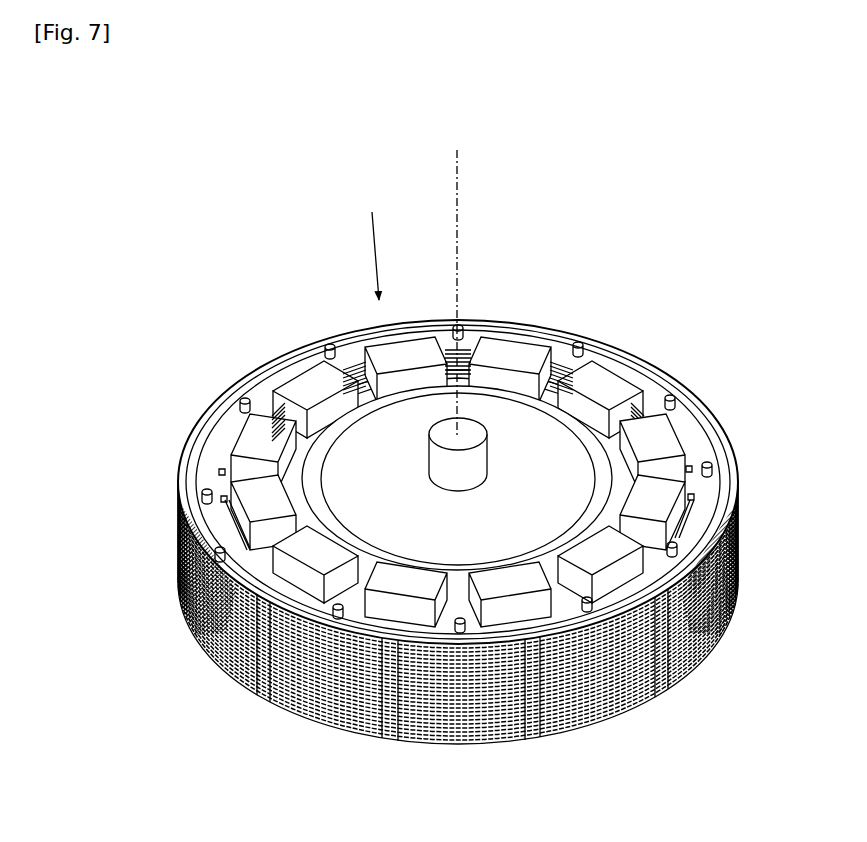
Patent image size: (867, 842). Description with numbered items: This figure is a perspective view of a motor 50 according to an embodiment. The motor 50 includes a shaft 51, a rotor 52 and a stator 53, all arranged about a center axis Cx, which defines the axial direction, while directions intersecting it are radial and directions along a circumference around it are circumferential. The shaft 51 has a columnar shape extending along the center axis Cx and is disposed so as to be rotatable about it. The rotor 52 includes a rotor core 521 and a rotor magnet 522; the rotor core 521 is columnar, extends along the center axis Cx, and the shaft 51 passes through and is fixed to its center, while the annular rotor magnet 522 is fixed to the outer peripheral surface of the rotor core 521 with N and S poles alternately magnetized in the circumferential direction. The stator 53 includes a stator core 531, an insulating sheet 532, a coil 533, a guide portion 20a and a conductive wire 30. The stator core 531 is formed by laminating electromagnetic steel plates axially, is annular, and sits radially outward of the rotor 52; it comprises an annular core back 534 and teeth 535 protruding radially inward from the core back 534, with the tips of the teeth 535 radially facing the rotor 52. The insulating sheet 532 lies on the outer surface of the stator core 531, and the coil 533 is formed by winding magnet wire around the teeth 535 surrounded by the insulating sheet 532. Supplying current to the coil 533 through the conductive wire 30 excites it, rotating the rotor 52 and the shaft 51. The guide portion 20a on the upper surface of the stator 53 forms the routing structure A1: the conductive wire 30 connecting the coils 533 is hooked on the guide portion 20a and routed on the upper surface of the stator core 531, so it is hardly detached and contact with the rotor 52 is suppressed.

The motor 50 is at (258, 222).
The shaft 51 is at (475, 462).
The rotor 52 is at (461, 580).
The rotor core 521 is at (513, 518).
The rotor magnet 522 is at (500, 555).
The stator 53 is at (200, 398).
The stator core 531 is at (180, 570).
The insulating sheet 532 is at (208, 500).
The coil 533 is at (652, 438).
The core back 534 is at (722, 537).
The teeth 535 is at (690, 500).
The conductive wire 30 is at (353, 347).
The guide portion 20a is at (457, 328).
The center axis Cx is at (491, 274).
The routing structure A1 is at (363, 240).